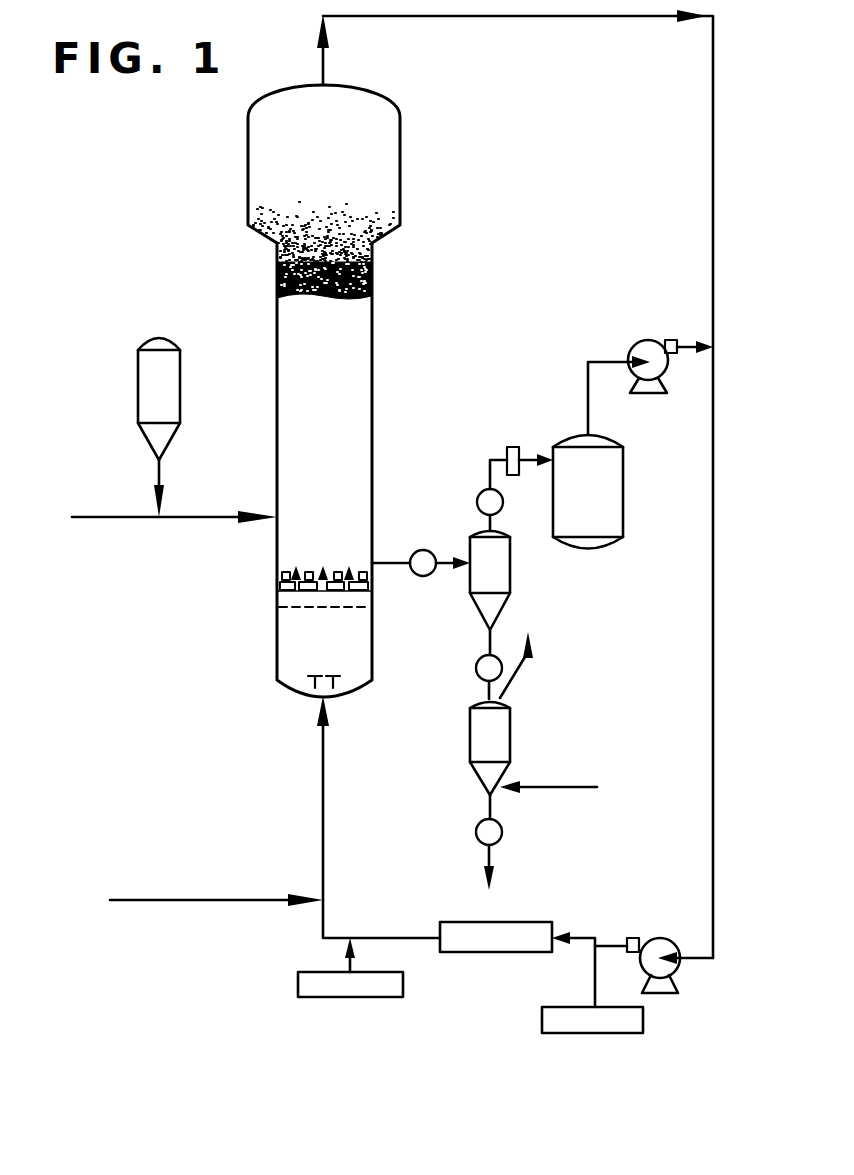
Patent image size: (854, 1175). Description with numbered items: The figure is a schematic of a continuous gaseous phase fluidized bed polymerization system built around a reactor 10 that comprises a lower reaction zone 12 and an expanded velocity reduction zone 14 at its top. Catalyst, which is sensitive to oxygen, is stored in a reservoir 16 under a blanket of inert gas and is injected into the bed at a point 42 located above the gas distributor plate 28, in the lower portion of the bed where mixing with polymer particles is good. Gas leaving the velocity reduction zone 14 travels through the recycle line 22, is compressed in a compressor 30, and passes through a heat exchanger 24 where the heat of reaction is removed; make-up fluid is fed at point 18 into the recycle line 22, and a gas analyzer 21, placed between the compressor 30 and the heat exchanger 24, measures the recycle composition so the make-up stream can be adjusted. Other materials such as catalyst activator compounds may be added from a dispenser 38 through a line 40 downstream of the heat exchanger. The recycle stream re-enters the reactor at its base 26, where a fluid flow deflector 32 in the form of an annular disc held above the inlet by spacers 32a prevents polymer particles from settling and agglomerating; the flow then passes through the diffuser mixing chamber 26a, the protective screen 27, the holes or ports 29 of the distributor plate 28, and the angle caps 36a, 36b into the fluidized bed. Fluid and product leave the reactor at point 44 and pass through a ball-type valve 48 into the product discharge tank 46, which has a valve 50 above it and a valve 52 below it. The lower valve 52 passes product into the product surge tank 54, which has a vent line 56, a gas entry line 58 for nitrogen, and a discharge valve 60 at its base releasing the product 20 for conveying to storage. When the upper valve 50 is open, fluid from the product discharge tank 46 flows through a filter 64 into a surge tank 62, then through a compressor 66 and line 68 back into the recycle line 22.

The reactor 10 is at (376, 373).
The reaction zone 12 is at (333, 457).
The velocity reduction zone 14 is at (386, 164).
The reservoir 16 is at (138, 358).
The make-up fluid feed point 18 is at (320, 892).
The product outlet stream 20 is at (486, 888).
The gas analyzer 21 is at (563, 1007).
The recycle line 22 is at (713, 255).
The heat exchanger 24 is at (480, 921).
The reactor inlet 26 is at (321, 698).
The diffuser mixing chamber 26a is at (300, 657).
The protective screen 27 is at (360, 608).
The gas distributor plate 28 is at (278, 593).
The holes or ports 29 is at (318, 598).
The compressor 30 is at (678, 967).
The fluid flow deflector 32 is at (335, 683).
The spacers 32a is at (312, 683).
The angle cap 36a is at (288, 570).
The angle cap 36b is at (332, 570).
The dispenser 38 is at (403, 983).
The line 40 is at (353, 968).
The catalyst injection point 42 is at (276, 512).
The product discharge point 44 is at (390, 561).
The product discharge tank 46 is at (512, 588).
The valve 48 is at (420, 551).
The valve 50 is at (503, 505).
The valve 52 is at (477, 668).
The product surge tank 54 is at (470, 730).
The vent line 56 is at (517, 683).
The gas entry line 58 is at (556, 786).
The discharge valve 60 is at (478, 822).
The surge tank 62 is at (624, 478).
The filter 64 is at (506, 452).
The compressor 66 is at (640, 343).
The line 68 is at (681, 340).